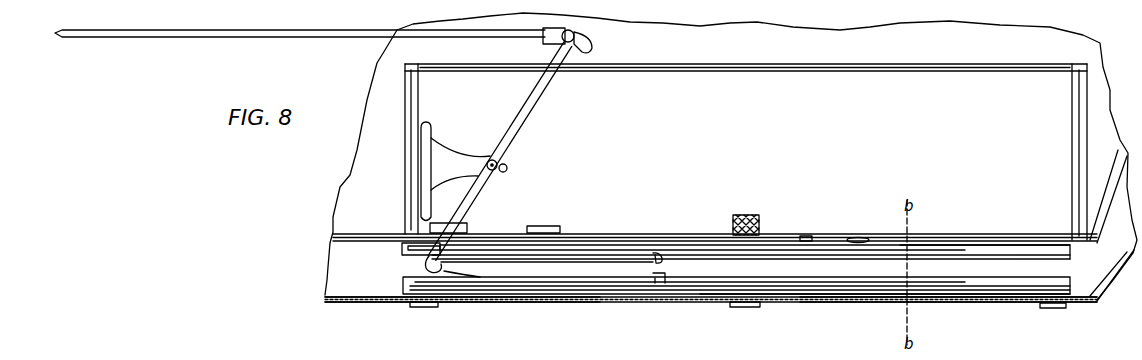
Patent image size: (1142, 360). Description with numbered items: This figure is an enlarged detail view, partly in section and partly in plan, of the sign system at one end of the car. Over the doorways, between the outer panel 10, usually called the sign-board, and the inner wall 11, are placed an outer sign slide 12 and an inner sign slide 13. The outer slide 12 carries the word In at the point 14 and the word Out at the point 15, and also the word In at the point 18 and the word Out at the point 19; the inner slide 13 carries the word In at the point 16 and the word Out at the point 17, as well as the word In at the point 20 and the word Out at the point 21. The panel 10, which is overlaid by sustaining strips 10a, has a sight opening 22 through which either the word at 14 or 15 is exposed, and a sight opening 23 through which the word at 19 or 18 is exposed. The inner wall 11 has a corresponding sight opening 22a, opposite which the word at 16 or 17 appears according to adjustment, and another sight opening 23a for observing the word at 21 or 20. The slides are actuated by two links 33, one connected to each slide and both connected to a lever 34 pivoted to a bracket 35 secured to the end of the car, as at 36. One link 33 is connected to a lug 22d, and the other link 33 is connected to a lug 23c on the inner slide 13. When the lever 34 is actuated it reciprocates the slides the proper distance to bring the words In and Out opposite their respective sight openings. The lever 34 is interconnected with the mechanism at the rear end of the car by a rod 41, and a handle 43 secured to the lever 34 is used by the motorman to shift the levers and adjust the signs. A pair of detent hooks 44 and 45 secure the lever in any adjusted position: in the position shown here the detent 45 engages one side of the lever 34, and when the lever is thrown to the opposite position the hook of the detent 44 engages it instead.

The panel 10 is at (1000, 303).
The sustaining strips 10a is at (415, 308).
The inner wall 11 is at (1007, 240).
The outer sign slide 12 is at (856, 305).
The inner sign slide 13 is at (843, 238).
The point bearing the word In 14 is at (943, 298).
The point bearing the word Out 15 is at (812, 305).
The point bearing the word In 16 is at (945, 240).
The point bearing the word Out 17 is at (808, 238).
The point bearing the word In 18 is at (465, 303).
The point bearing the word Out 19 is at (603, 303).
The point bearing the word In 20 is at (485, 233).
The point bearing the word Out 21 is at (604, 235).
The sight opening 22 is at (932, 303).
The sight opening 22a is at (928, 238).
The lug 22d is at (668, 278).
The sight opening 23 is at (545, 303).
The sight opening 23a is at (588, 234).
The lug 23c is at (667, 260).
The links 33 is at (425, 270).
The lever 34 is at (512, 132).
The bracket 35 is at (448, 160).
The end of the car 36 is at (402, 172).
The rod 41 is at (287, 37).
The handle 43 is at (593, 43).
The detent hook 44 is at (545, 226).
The detent hook 45 is at (432, 223).